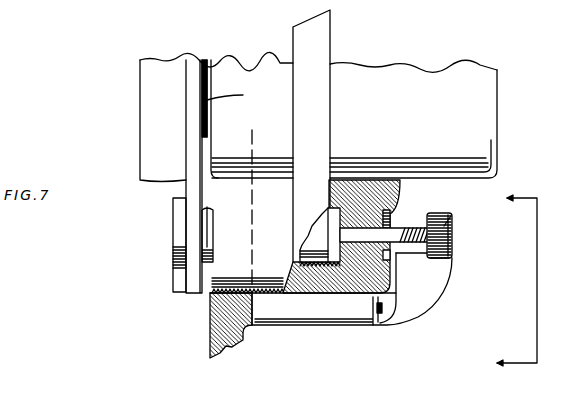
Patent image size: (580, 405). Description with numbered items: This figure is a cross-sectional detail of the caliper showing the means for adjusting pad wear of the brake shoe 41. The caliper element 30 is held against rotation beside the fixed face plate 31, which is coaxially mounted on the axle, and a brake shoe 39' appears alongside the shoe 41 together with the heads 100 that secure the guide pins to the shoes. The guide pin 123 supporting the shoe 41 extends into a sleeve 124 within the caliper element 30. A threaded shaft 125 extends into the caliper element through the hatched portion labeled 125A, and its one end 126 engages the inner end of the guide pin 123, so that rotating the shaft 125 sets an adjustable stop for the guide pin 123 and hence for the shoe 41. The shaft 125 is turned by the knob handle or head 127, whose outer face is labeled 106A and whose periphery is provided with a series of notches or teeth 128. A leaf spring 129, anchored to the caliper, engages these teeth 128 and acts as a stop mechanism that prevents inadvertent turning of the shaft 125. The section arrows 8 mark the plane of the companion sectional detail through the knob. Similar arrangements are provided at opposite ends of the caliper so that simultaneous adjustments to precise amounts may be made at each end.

The caliper element 30 is at (497, 88).
The brake shoe 39' is at (136, 121).
The brake shoe 41 is at (200, 65).
The fixed face plate 31 is at (315, 48).
The heads 100 is at (173, 233).
The clamp body 125A is at (403, 203).
The end of threaded shaft 126 is at (333, 217).
The guide pins 123 is at (300, 235).
The threaded shaft 125 is at (400, 233).
The notches or teeth 128 is at (452, 215).
The head face 106A is at (452, 237).
The knob handle 127 is at (452, 253).
The leaf spring 129 is at (413, 303).
The sleeve 124 is at (315, 295).
The section line 8- 8 is at (510, 282).